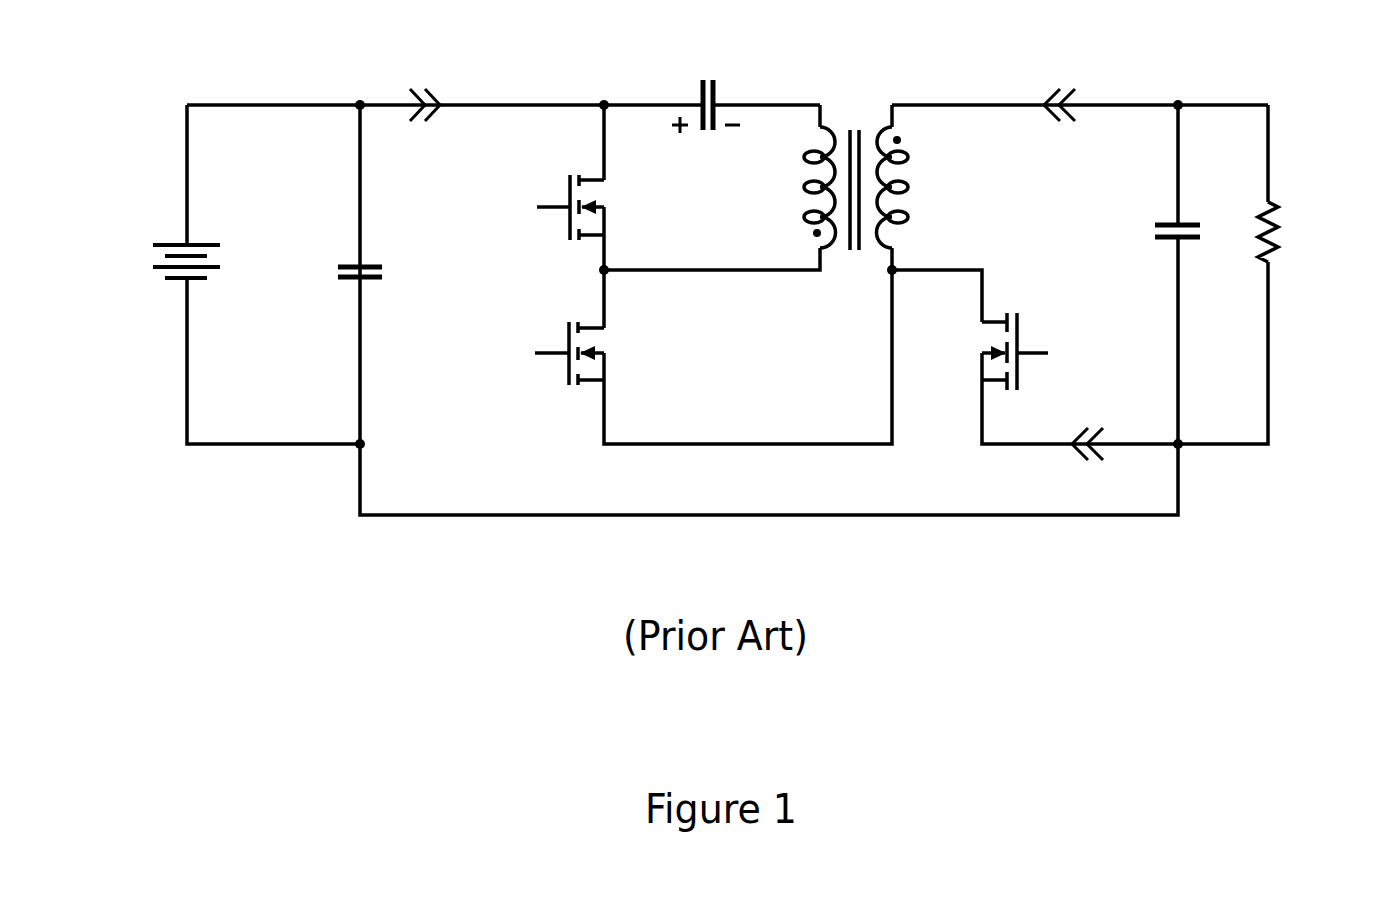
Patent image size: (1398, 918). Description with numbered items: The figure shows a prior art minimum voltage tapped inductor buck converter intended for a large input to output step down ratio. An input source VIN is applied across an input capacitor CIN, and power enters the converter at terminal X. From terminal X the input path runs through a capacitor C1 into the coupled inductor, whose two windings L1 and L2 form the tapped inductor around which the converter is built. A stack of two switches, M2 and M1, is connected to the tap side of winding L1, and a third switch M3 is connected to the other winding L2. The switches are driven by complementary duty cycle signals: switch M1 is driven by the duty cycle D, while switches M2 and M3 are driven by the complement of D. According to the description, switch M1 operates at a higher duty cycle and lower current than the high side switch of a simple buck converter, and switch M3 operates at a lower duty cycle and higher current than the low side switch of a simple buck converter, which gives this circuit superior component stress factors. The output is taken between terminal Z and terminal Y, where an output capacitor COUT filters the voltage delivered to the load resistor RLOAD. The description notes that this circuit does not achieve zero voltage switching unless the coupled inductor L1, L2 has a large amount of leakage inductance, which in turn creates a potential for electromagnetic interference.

The input voltage source VIN is at (157, 265).
The input capacitor CIN is at (332, 276).
The terminal X is at (425, 85).
The capacitor C1 is at (706, 81).
The switch M1 is at (601, 353).
The switch M2 is at (555, 207).
The switch M3 is at (1031, 351).
The duty cycle drive signal D is at (511, 351).
The primary winding L1 is at (810, 188).
The secondary winding L2 is at (916, 187).
The terminal Z is at (1059, 84).
The terminal Y is at (1087, 467).
The output capacitor COUT is at (1132, 235).
The load resistor RLOAD is at (1320, 232).